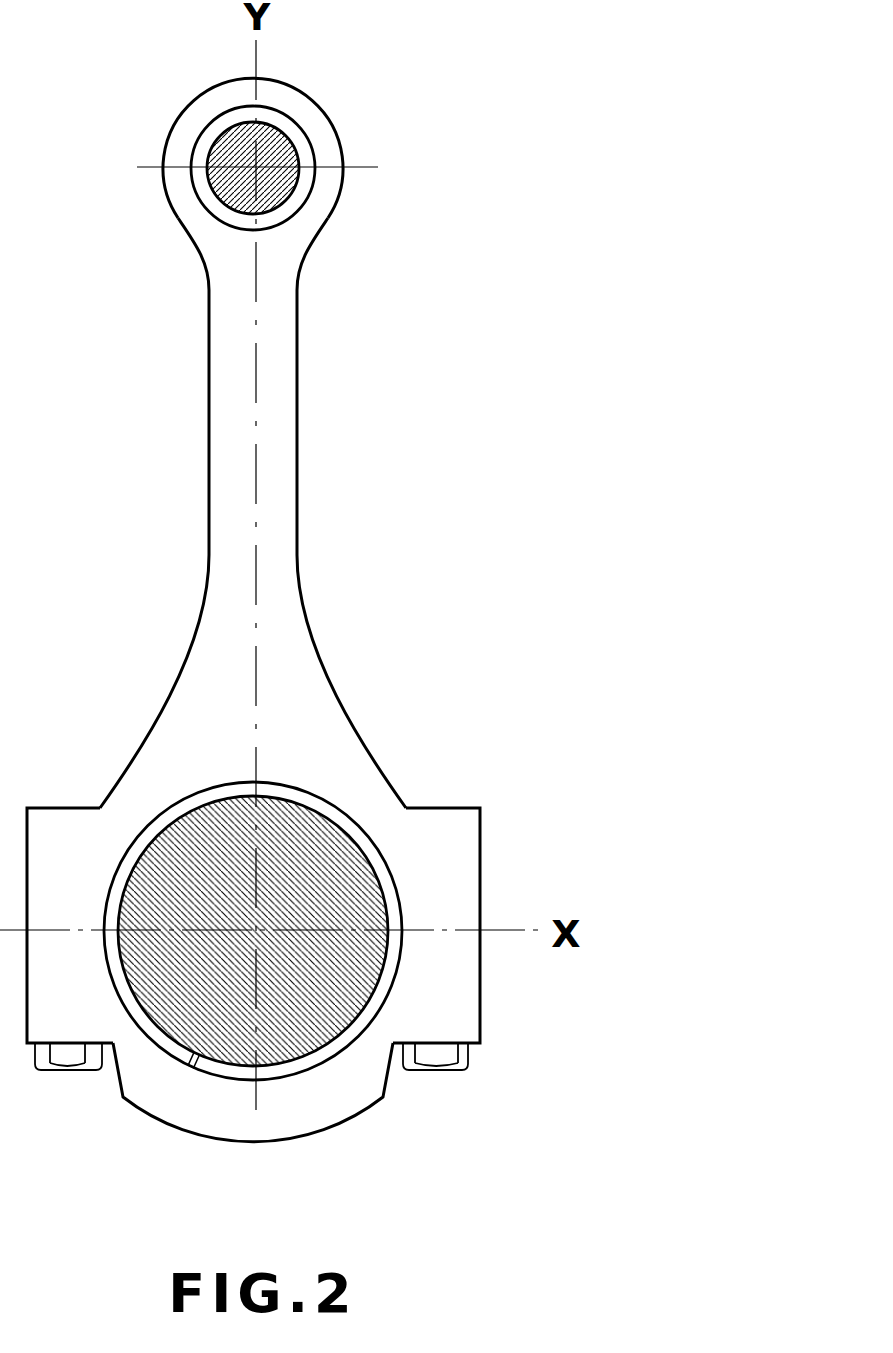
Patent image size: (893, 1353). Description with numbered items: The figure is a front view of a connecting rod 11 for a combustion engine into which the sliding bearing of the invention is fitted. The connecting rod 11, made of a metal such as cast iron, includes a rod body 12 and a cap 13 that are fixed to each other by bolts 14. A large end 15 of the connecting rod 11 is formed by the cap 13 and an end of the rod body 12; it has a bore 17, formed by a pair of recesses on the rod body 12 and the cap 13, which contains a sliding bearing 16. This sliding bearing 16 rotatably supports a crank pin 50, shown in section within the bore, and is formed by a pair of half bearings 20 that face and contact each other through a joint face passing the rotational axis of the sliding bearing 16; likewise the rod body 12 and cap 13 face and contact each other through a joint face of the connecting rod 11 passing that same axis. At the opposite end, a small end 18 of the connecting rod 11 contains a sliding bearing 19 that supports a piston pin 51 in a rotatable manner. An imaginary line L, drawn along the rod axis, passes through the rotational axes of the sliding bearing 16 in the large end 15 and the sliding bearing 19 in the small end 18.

The connecting rod 11 is at (392, 523).
The rod body 12 is at (335, 702).
The cap 13 is at (353, 1117).
The bolts 14 is at (473, 1062).
The large end 15 is at (498, 899).
The sliding bearing 16 is at (275, 927).
The bore 17 is at (207, 1057).
The small end 18 is at (338, 203).
The sliding bearing 19 is at (304, 130).
The half bearings 20 is at (196, 778).
The crank pin 50 is at (285, 822).
The piston pin 51 is at (241, 132).
The imaginary line L is at (255, 598).